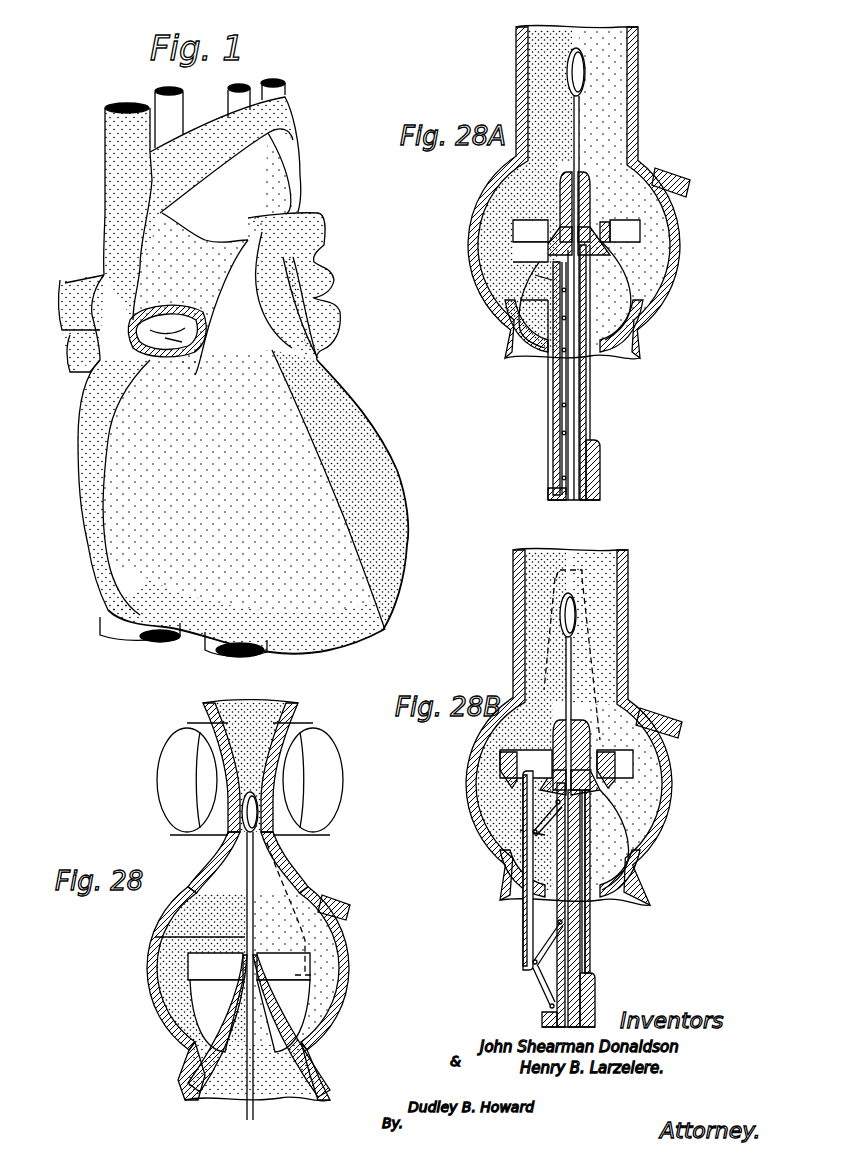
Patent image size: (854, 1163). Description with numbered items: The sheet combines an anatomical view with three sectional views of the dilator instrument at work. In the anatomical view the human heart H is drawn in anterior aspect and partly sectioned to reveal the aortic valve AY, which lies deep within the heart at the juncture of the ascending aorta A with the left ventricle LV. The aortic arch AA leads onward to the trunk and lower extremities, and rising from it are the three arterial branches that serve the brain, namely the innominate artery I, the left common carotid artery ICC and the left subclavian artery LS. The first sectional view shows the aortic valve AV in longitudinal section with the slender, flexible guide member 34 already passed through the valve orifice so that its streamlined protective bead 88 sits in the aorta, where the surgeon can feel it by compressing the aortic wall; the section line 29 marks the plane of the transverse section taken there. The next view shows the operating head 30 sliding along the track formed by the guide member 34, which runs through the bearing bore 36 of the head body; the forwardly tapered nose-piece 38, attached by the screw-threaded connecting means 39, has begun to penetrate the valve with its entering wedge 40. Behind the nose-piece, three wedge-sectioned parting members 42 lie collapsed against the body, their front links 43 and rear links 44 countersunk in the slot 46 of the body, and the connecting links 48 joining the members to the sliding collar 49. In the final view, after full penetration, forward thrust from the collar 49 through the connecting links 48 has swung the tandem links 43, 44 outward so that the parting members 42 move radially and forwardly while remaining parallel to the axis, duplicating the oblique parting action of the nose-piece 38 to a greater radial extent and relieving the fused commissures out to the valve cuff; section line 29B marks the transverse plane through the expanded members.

In FIG. 1, the innominate artery I is at (150, 128).
In FIG. 1, the left common carotid artery ICC is at (228, 97).
In FIG. 1, the left subclavian artery LS is at (280, 102).
In FIG. 1, the aortic arch AA is at (297, 190).
In FIG. 1, the ascending aorta A is at (140, 292).
In FIG. 1, the aortic valve AY is at (135, 320).
In FIG. 1, the left ventricle LV is at (398, 512).
In FIG. 1, the heart H is at (120, 545).
In FIG. 28A, the heart H is at (648, 353).
In FIG. 28B, the heart H is at (648, 896).
In FIG. 28, the heart H is at (185, 1088).
In FIG. 28A, the protective bead 88 is at (583, 80).
In FIG. 28B, the protective bead 88 is at (578, 612).
In FIG. 28, the protective bead 88 is at (262, 818).
In FIG. 28A, the nose-piece 38 is at (595, 192).
In FIG. 28B, the nose-piece 38 is at (592, 737).
In FIG. 28A, the entering wedge 40 is at (560, 178).
In FIG. 28B, the entering wedge 40 is at (505, 744).
In FIG. 28A, the screw-threaded connecting means 39 is at (490, 237).
In FIG. 28B, the screw-threaded connecting means 39 is at (540, 777).
In FIG. 28A, the slot in body 46 is at (530, 265).
In FIG. 28B, the slot in body 46 is at (520, 858).
In FIG. 28A, the aortic valve AV is at (528, 290).
In FIG. 28B, the aortic valve AV is at (512, 838).
In FIG. 28, the aortic valve AV is at (222, 1008).
In FIG. 28A, the front links 43 is at (510, 316).
In FIG. 28B, the front links 43 is at (520, 810).
In FIG. 28A, the parting members 42 is at (590, 372).
In FIG. 28B, the parting members 42 is at (523, 915).
In FIG. 28A, the guide member 34 is at (590, 395).
In FIG. 28B, the guide member 34 is at (560, 880).
In FIG. 28, the guide member 34 is at (258, 935).
In FIG. 28A, the bearing bore 36 is at (586, 425).
In FIG. 28B, the bearing bore 36 is at (588, 963).
In FIG. 28A, the operating head 30 is at (602, 462).
In FIG. 28B, the operating head 30 is at (592, 936).
In FIG. 28A, the collar 49 is at (602, 498).
In FIG. 28B, the collar 49 is at (540, 1018).
In FIG. 28A, the rear links 44 is at (553, 405).
In FIG. 28B, the rear links 44 is at (555, 930).
In FIG. 28A, the connecting links 48 is at (550, 461).
In FIG. 28B, the connecting links 48 is at (548, 992).
In FIG. 28, the section line 29— 29 is at (150, 940).
In FIG. 28B, the section line 29B— 29B is at (470, 742).